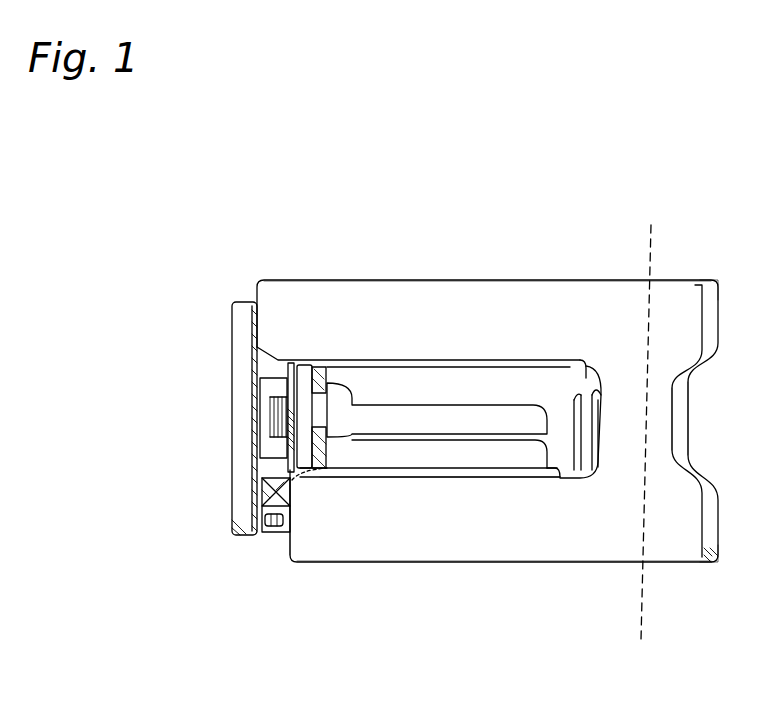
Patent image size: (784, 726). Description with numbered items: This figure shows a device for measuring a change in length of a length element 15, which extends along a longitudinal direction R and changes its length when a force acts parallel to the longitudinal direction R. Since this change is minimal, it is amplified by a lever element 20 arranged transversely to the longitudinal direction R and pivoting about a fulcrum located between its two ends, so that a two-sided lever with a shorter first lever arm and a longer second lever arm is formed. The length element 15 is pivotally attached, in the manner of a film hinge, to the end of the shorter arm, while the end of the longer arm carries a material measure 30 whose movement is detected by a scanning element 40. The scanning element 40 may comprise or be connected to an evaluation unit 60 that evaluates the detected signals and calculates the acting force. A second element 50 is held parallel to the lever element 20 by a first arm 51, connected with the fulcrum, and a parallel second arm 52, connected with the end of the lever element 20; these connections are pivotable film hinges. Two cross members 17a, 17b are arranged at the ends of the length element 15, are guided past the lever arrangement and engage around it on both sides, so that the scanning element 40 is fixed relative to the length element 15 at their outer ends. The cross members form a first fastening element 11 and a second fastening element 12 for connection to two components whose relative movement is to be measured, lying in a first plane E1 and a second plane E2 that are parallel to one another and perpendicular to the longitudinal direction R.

The first fastening element 11 is at (344, 290).
The second fastening element 12 is at (373, 547).
The length element 15 is at (646, 428).
The first cross member 17a is at (497, 300).
The second cross member 17b is at (518, 543).
The lever element 20 is at (398, 385).
The material measure 30 is at (286, 479).
The scanning element 40 is at (252, 430).
The second element 50 is at (448, 450).
The first arm 51 is at (558, 430).
The second arm 52 is at (332, 412).
The evaluation unit 60 is at (236, 322).
The longitudinal direction R is at (655, 259).
The first plane E1 is at (701, 277).
The second plane E2 is at (680, 563).